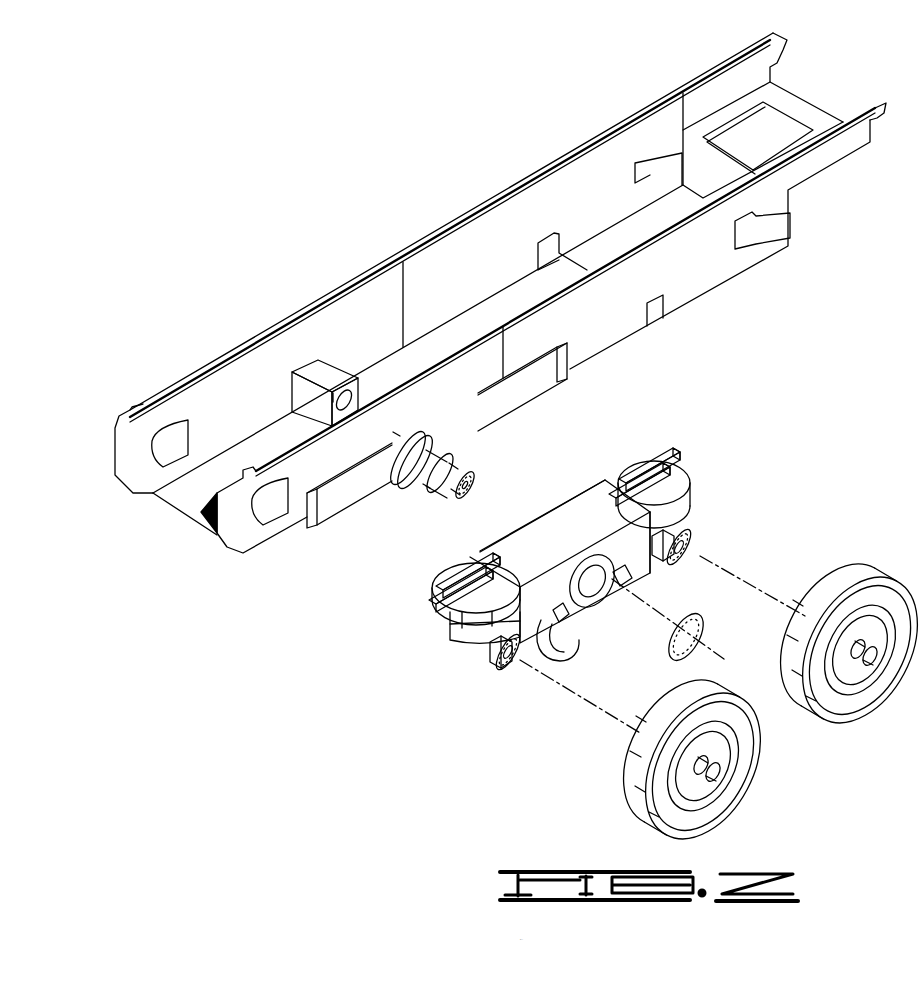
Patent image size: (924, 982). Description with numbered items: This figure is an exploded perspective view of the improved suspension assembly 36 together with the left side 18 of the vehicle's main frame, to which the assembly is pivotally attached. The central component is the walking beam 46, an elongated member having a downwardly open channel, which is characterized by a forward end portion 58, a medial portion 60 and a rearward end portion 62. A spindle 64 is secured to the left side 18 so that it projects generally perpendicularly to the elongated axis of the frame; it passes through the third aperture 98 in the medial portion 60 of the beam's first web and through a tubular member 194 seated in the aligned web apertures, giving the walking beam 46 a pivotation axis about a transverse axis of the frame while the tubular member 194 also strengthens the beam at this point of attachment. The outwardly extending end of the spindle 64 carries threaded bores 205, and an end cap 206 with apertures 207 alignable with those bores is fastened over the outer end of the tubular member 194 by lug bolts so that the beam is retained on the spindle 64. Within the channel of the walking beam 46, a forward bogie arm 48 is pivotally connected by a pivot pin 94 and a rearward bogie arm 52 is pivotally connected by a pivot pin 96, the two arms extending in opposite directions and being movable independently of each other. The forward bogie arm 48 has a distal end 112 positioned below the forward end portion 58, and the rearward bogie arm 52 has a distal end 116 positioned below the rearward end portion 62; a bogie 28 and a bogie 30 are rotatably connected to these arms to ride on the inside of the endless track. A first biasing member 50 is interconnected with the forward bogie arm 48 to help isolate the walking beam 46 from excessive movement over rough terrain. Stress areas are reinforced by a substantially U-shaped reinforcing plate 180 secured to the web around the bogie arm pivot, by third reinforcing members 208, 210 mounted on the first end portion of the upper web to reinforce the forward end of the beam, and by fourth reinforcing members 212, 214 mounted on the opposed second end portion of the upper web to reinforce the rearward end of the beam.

The left side 18 is at (531, 295).
The bogie 28 is at (750, 762).
The bogie 30 is at (845, 714).
The suspension assembly 36 is at (688, 448).
The walking beam 46 is at (581, 486).
The forward bogie arm 48 is at (492, 670).
The first biasing member 50 is at (455, 630).
The rearward bogie arm 52 is at (698, 530).
The forward end portion 58 is at (437, 595).
The medial portion 60 is at (628, 552).
The rearward end portion 62 is at (690, 478).
The spindle 64 is at (423, 495).
The pivot pin 94 is at (561, 646).
The pivot pin 96 is at (642, 590).
The third aperture 98 is at (586, 572).
The distal end 112 is at (479, 656).
The distal end 116 is at (700, 548).
The reinforcing plate 180 is at (558, 622).
The tubular member 194 is at (606, 566).
The threaded bores 205 is at (474, 472).
The end cap 206 is at (707, 625).
The apertures 207 is at (660, 614).
The third reinforcing member 208 is at (462, 574).
The third reinforcing member 210 is at (492, 582).
The fourth reinforcing member 212 is at (654, 462).
The fourth reinforcing member 214 is at (660, 478).